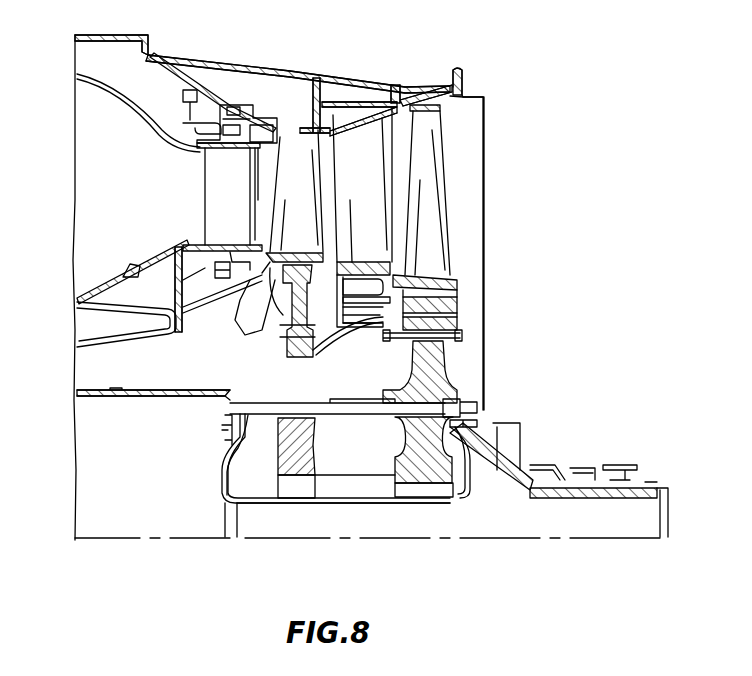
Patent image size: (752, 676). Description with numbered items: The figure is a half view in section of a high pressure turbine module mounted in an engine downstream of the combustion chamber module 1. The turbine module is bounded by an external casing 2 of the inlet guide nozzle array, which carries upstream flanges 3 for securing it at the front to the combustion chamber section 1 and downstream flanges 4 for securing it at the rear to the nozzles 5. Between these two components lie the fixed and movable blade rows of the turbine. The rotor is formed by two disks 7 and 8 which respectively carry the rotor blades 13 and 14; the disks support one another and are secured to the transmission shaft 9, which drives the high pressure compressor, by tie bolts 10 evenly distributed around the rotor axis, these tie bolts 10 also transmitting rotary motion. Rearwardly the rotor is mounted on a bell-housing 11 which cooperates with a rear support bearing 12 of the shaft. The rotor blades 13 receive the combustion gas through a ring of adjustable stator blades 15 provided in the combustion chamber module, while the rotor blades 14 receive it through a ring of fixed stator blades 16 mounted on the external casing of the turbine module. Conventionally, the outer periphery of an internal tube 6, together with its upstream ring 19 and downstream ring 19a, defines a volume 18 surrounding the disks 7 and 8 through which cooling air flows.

The combustion chamber module 1 is at (112, 195).
The outer casing 2 is at (312, 72).
The upstream flange 3 is at (153, 50).
The downstream flange 4 is at (451, 66).
The nozzles 5 is at (472, 180).
The internal tube 6 is at (330, 520).
The disk 7 is at (313, 445).
The disk 8 is at (400, 463).
The transmission shaft 9 is at (172, 396).
The tie bolt 10 is at (345, 400).
The bell-housing 11 is at (510, 470).
The rear support bearing 12 is at (622, 466).
The rotor blade 13 is at (304, 194).
The rotor blade 14 is at (436, 194).
The adjustable stator blade 15 is at (236, 194).
The fixed stator blade 16 is at (370, 194).
The volume 18 is at (354, 484).
The upstream ring 19 is at (222, 468).
The downstream ring 19a is at (472, 495).